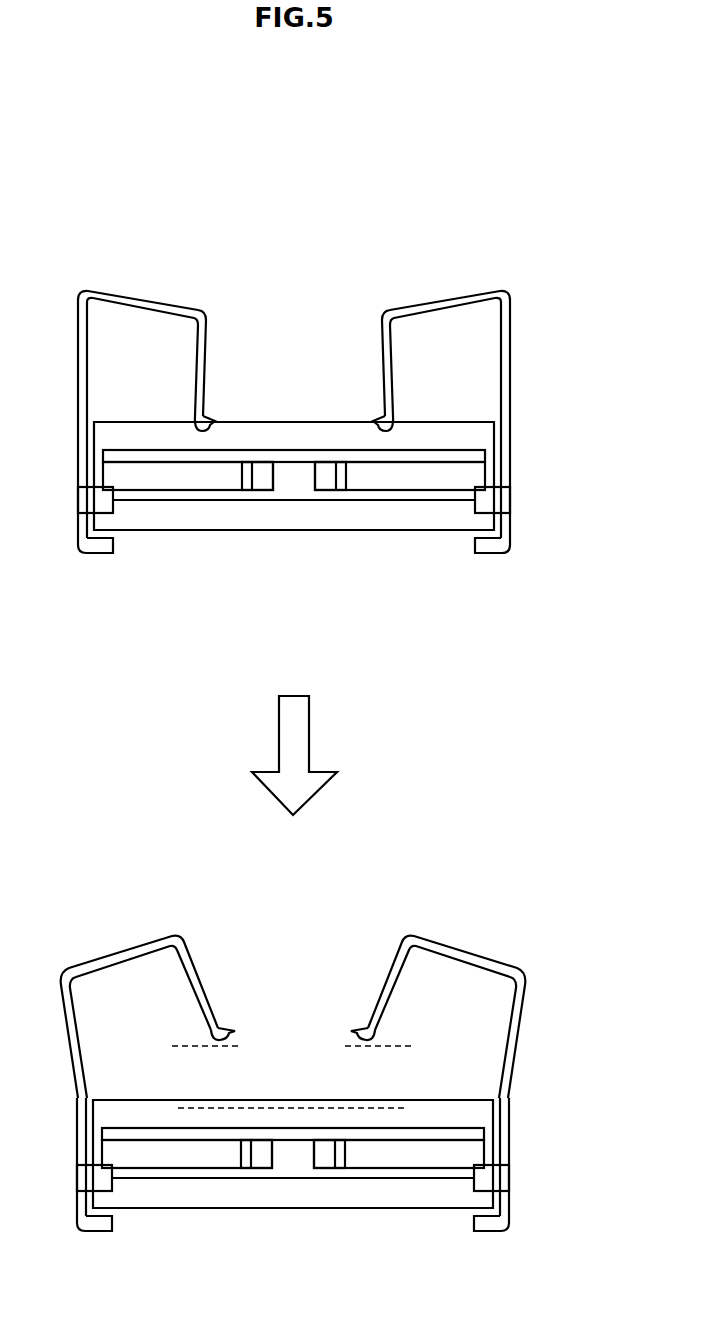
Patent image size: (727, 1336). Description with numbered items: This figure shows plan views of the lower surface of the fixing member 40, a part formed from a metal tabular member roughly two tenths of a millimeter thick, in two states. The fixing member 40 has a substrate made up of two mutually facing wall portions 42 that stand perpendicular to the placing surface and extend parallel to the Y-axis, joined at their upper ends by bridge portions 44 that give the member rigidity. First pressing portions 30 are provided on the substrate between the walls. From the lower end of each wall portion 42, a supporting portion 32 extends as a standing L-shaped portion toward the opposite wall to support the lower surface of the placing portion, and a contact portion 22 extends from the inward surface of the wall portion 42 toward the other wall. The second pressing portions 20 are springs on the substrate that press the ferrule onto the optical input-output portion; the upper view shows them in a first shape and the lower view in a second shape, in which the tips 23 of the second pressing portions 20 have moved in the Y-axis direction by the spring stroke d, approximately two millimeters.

The second pressing portions 20 is at (156, 292).
The contact portions 22 is at (98, 554).
The tips 23 is at (172, 428).
The first pressing portions 30 is at (262, 482).
The supporting portions 32 is at (108, 506).
The fixing member 40 is at (532, 266).
The wall portions 42 is at (78, 456).
The bridge portions 44 is at (296, 426).